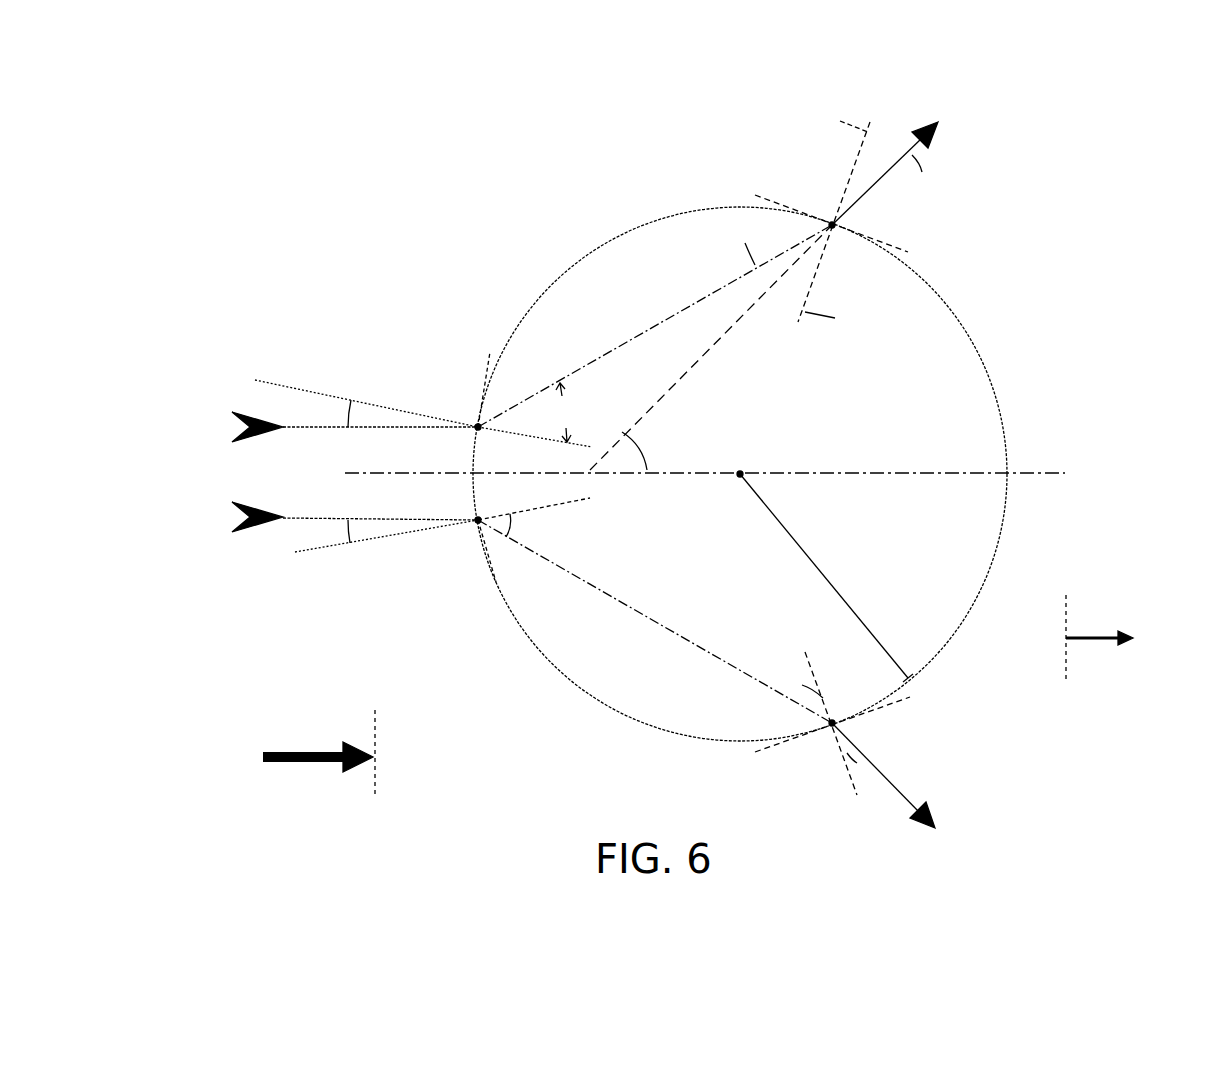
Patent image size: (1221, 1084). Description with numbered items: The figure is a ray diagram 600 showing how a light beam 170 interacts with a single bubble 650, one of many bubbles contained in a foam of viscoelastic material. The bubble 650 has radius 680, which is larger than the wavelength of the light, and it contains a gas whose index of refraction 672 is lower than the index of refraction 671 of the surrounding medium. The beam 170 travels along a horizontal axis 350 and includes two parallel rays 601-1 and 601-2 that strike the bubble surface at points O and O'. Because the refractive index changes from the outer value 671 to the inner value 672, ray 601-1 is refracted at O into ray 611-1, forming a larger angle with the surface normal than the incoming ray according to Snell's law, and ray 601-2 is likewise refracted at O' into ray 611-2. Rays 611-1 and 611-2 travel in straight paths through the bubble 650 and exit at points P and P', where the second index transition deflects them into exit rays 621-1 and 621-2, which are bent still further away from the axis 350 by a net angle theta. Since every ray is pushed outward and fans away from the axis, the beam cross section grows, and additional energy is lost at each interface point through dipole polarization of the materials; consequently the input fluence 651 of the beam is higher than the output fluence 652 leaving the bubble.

The optical system diagram 600 is at (360, 115).
The bubble 650 is at (592, 252).
The optical axis 350 is at (903, 470).
The light beam 170 is at (233, 432).
The ray 601-1 is at (235, 415).
The ray 601-2 is at (248, 533).
The ray 611-1 is at (688, 305).
The ray 611-2 is at (653, 620).
The ray 621-1 is at (880, 168).
The ray 621-2 is at (877, 763).
The radius 680 is at (847, 562).
The index of refraction of surrounding medium 671 is at (1041, 294).
The index of refraction of gas 672 is at (816, 406).
The input fluence 651 is at (310, 762).
The output fluence 652 is at (1095, 643).